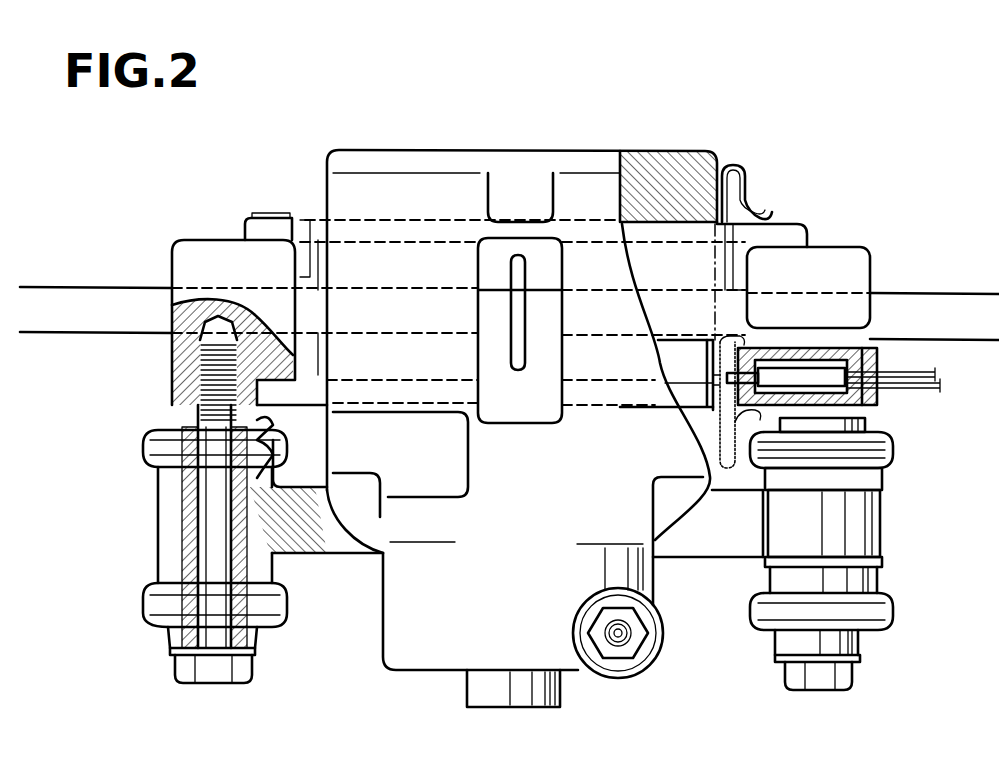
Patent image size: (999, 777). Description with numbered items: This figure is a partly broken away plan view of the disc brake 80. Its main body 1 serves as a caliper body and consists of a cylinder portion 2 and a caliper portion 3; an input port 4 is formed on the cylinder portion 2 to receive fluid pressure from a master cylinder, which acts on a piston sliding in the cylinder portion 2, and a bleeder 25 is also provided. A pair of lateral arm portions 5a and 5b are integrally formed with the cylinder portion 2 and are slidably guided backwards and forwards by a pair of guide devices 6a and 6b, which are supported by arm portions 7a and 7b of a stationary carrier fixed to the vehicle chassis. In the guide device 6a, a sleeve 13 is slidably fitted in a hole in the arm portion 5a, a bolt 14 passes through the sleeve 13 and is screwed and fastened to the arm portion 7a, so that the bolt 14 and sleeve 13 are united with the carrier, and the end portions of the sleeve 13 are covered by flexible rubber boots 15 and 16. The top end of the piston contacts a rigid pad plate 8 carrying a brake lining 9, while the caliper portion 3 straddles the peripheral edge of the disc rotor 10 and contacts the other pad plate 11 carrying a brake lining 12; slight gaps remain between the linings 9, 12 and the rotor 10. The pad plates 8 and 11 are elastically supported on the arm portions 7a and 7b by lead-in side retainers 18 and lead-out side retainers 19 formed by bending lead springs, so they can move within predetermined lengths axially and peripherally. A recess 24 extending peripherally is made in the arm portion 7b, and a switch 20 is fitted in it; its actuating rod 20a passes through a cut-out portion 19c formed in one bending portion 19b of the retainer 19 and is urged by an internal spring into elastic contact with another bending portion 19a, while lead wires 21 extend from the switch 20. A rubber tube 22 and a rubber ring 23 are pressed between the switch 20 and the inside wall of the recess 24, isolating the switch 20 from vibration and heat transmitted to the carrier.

The main body 1 is at (412, 140).
The cylinder portion 2 is at (382, 623).
The caliper portion 3 is at (543, 172).
The input port 4 is at (470, 695).
The lateral arm portion 5a is at (303, 545).
The lateral arm portion 5b is at (705, 545).
The guide device 6a is at (223, 690).
The guide device 6b is at (828, 697).
The arm portion of carrier 7a is at (205, 258).
The arm portion of carrier 7b is at (836, 255).
The pad plate 8 is at (686, 395).
The brake lining 9 is at (683, 378).
The disc rotor 10 is at (97, 300).
The pad plate 11 is at (633, 228).
The brake lining 12 is at (665, 258).
The sleeve 13 is at (185, 540).
The bolt 14 is at (205, 507).
The rubber boot 15 is at (160, 608).
The rubber boot 16 is at (160, 446).
The lead-in side retainer 18 is at (287, 408).
The lead-out side retainer 19 is at (732, 468).
The bending portion 19a is at (712, 382).
The bending portion 19b is at (728, 348).
The cut-out portion 19c is at (717, 430).
The switch 20 is at (790, 375).
The actuating rod 20a is at (742, 372).
The lead wires 21 is at (905, 382).
The rubber tube 22 is at (832, 355).
The rubber ring 23 is at (862, 355).
The recess 24 is at (880, 400).
The bleeder 25 is at (617, 647).
The disc brake 80 is at (817, 145).